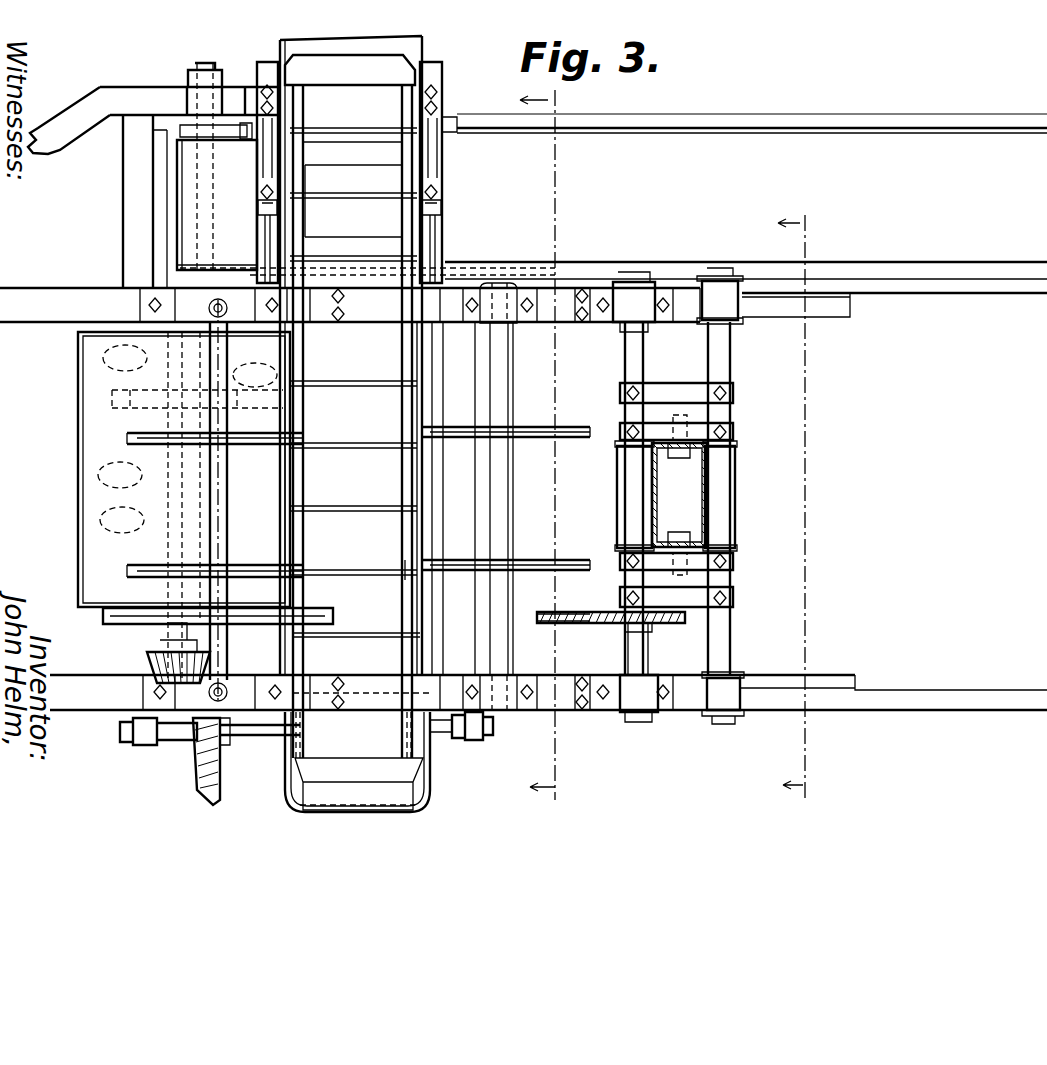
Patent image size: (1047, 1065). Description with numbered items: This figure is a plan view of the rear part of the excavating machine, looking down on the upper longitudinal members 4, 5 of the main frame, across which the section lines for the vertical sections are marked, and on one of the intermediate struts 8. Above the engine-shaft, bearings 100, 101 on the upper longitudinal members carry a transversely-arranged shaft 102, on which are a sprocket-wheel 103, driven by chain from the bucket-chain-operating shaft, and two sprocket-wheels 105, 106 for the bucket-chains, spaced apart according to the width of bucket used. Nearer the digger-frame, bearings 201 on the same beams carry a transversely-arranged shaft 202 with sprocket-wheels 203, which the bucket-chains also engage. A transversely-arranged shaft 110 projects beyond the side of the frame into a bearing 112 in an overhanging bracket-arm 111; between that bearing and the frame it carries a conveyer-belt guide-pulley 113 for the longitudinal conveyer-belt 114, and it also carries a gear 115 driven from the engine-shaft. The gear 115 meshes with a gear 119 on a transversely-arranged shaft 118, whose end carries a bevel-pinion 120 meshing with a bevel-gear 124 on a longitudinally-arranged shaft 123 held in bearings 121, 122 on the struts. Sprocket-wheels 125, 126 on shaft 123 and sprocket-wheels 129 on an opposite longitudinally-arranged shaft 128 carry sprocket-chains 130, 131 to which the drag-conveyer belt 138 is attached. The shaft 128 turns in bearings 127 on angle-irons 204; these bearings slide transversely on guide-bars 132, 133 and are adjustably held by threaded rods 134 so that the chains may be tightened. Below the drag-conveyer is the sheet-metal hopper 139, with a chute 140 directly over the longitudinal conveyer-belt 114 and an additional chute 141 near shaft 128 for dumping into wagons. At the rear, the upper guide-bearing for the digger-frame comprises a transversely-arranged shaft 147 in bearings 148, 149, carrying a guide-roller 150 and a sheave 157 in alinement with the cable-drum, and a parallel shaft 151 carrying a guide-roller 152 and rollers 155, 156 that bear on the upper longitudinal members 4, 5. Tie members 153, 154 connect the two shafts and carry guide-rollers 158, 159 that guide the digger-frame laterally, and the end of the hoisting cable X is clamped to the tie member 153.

The upper longitudinal member 4 is at (872, 690).
The upper longitudinal member 5 is at (907, 290).
The intermediate strut 8 is at (807, 505).
The cable X is at (570, 623).
The bearing 100 is at (232, 322).
The bearing 101 is at (238, 695).
The transversely-arranged shaft 102 is at (228, 515).
The sprocket-wheel 103 is at (233, 624).
The sprocket-wheel 105 is at (235, 444).
The sprocket-wheel 106 is at (245, 560).
The transversely-arranged shaft 110 is at (203, 73).
The overhanging bracket-arm 111 is at (140, 93).
The bearing 112 is at (213, 90).
The conveyer-belt guide-pulley 113 is at (158, 140).
The longitudinal conveyer-belt 114 is at (188, 215).
The gear 115 is at (255, 390).
The transversely-arranged shaft 118 is at (162, 470).
The gear 119 is at (125, 383).
The bevel-pinion 120 is at (150, 668).
The bearing 121 is at (472, 735).
The bearing 122 is at (148, 748).
The longitudinally-arranged shaft 123 is at (265, 735).
The bevel-gear 124 is at (218, 790).
The sprocket-wheel 125 is at (410, 728).
The sprocket-wheel 126 is at (305, 730).
The bearing 127 is at (446, 122).
The longitudinally-arranged shaft 128 is at (347, 128).
The sprocket-wheel 129 is at (400, 142).
The sprocket-chain 130 is at (305, 545).
The sprocket-chain 131 is at (404, 550).
The guide-bar 132 is at (265, 178).
The guide-bar 133 is at (258, 207).
The threaded rod 134 is at (260, 225).
The drag-conveyer belt 138 is at (368, 506).
The hopper 139 is at (80, 510).
The chute 140 is at (353, 213).
The chute 141 is at (410, 46).
The transversely-arranged shaft 147 is at (640, 343).
The bearing 148 is at (616, 312).
The bearing 149 is at (645, 705).
The guide-roller 150 is at (625, 492).
The shaft 151 is at (724, 350).
The guide-roller 152 is at (728, 490).
The tie member 153 is at (676, 411).
The tie member 154 is at (676, 580).
The roller 155 is at (725, 297).
The roller 156 is at (735, 705).
The sheave 157 is at (668, 623).
The guide-roller 158 is at (685, 455).
The guide-roller 159 is at (695, 540).
The bearing 201 is at (505, 318).
The transversely-arranged shaft 202 is at (505, 480).
The sprocket-wheel 203 is at (525, 420).
The angle-iron 204 is at (446, 258).